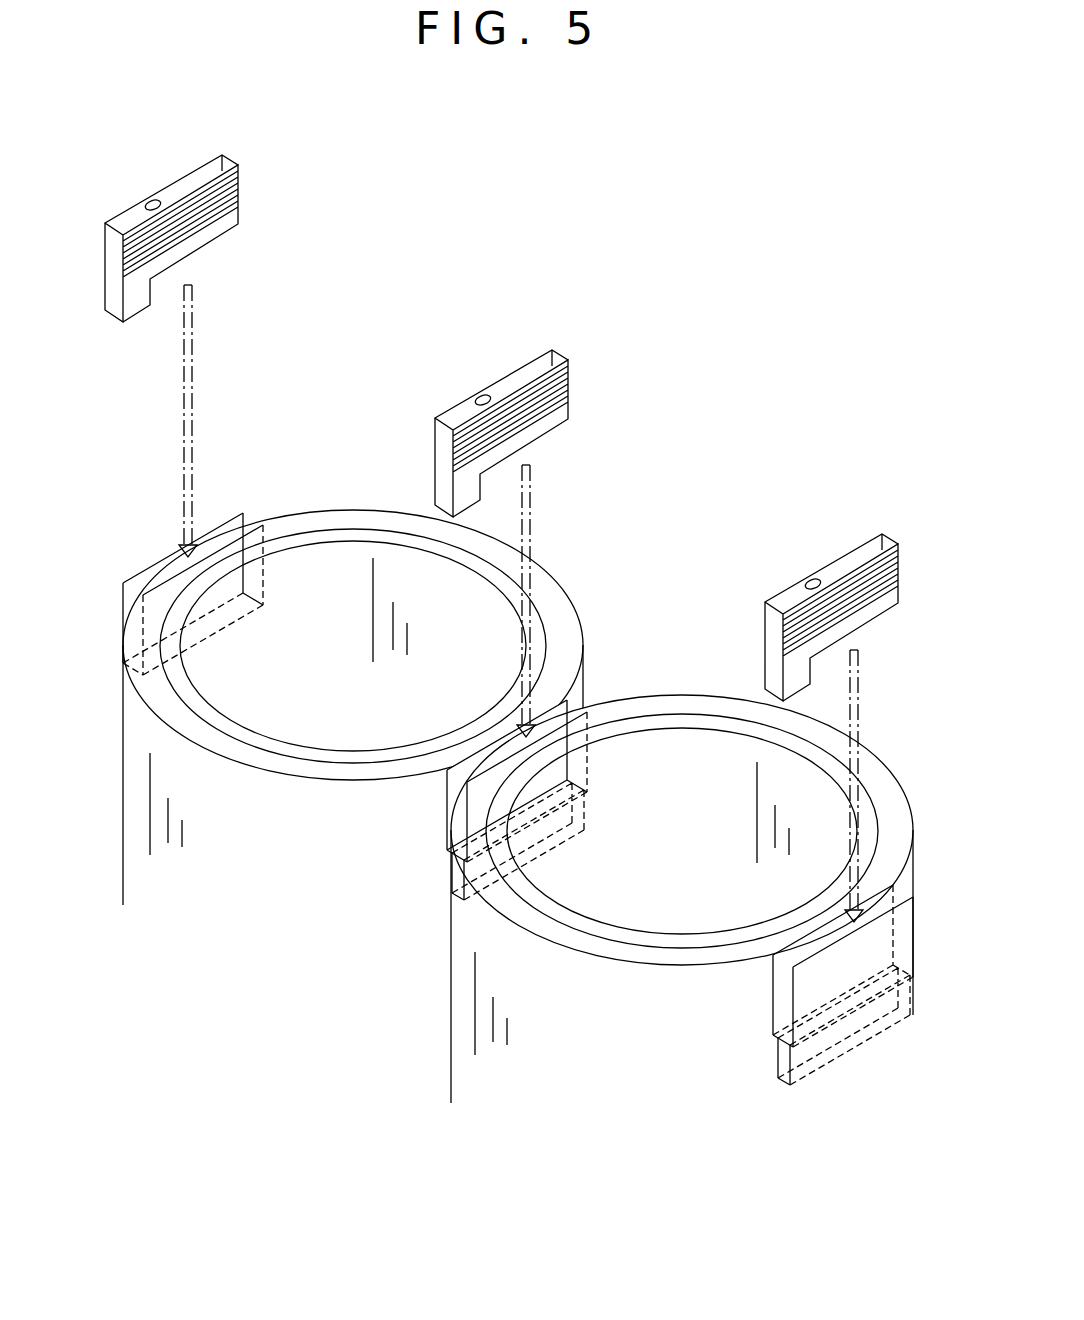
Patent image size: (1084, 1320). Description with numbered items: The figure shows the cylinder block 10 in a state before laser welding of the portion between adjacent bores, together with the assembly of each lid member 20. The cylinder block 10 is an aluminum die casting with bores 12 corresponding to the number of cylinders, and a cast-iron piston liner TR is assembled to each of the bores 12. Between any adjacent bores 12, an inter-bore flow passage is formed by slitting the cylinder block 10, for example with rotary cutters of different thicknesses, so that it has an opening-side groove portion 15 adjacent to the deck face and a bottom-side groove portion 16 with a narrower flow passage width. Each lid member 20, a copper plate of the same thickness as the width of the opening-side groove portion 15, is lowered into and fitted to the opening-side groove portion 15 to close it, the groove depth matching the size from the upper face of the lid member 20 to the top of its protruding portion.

The cylinder block 10 is at (745, 227).
The bore 12 is at (340, 522).
The piston liner TR is at (232, 728).
The opening-side groove portion 15 is at (447, 851).
The bottom-side groove portion 16 is at (455, 907).
The lid member 20 is at (185, 182).